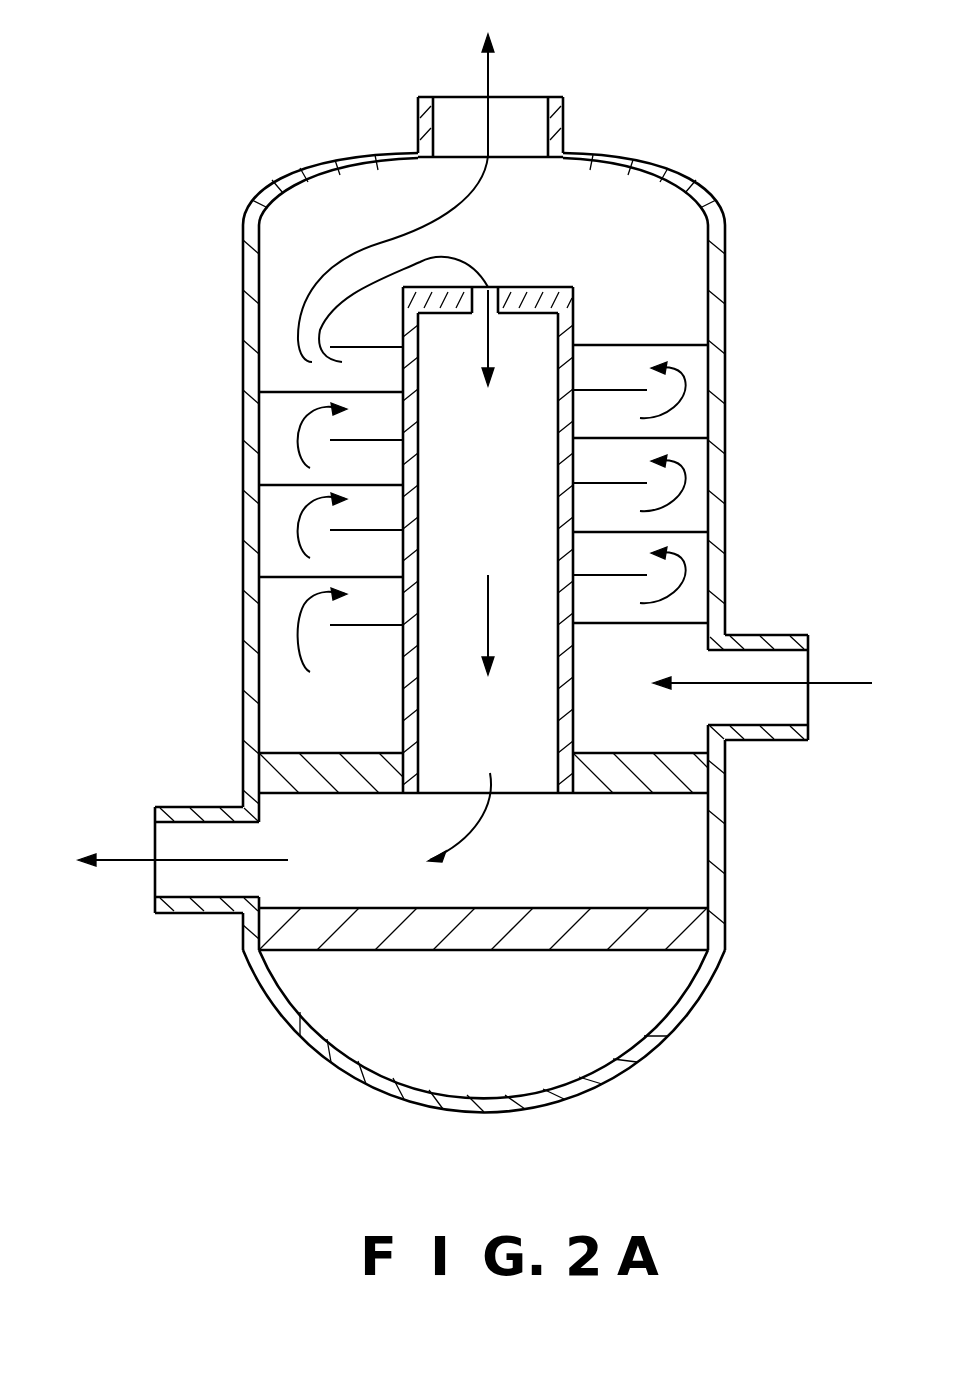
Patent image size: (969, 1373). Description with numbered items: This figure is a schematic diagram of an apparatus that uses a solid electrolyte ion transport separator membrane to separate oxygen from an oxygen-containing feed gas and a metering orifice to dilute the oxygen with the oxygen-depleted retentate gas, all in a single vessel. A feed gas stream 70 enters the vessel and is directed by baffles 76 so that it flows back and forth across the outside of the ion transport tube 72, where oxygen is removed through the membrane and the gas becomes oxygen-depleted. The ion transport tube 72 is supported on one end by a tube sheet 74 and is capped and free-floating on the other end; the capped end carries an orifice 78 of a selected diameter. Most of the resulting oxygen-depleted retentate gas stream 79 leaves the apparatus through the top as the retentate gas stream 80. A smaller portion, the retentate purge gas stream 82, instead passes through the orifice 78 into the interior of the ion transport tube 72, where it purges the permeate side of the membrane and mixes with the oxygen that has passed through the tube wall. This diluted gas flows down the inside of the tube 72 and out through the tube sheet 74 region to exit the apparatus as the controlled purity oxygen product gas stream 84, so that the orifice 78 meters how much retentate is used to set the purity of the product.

The feed gas stream 70 is at (838, 684).
The ion transport tube 72 is at (563, 318).
The tube sheet 74 is at (664, 794).
The baffles 76 is at (655, 622).
The orifice 78 is at (497, 287).
The oxygen-depleted retentate gas stream 79 is at (683, 400).
The retentate gas stream 80 is at (490, 74).
The retentate purge gas stream 82 is at (447, 257).
The controlled purity oxygen product gas stream 84 is at (112, 862).